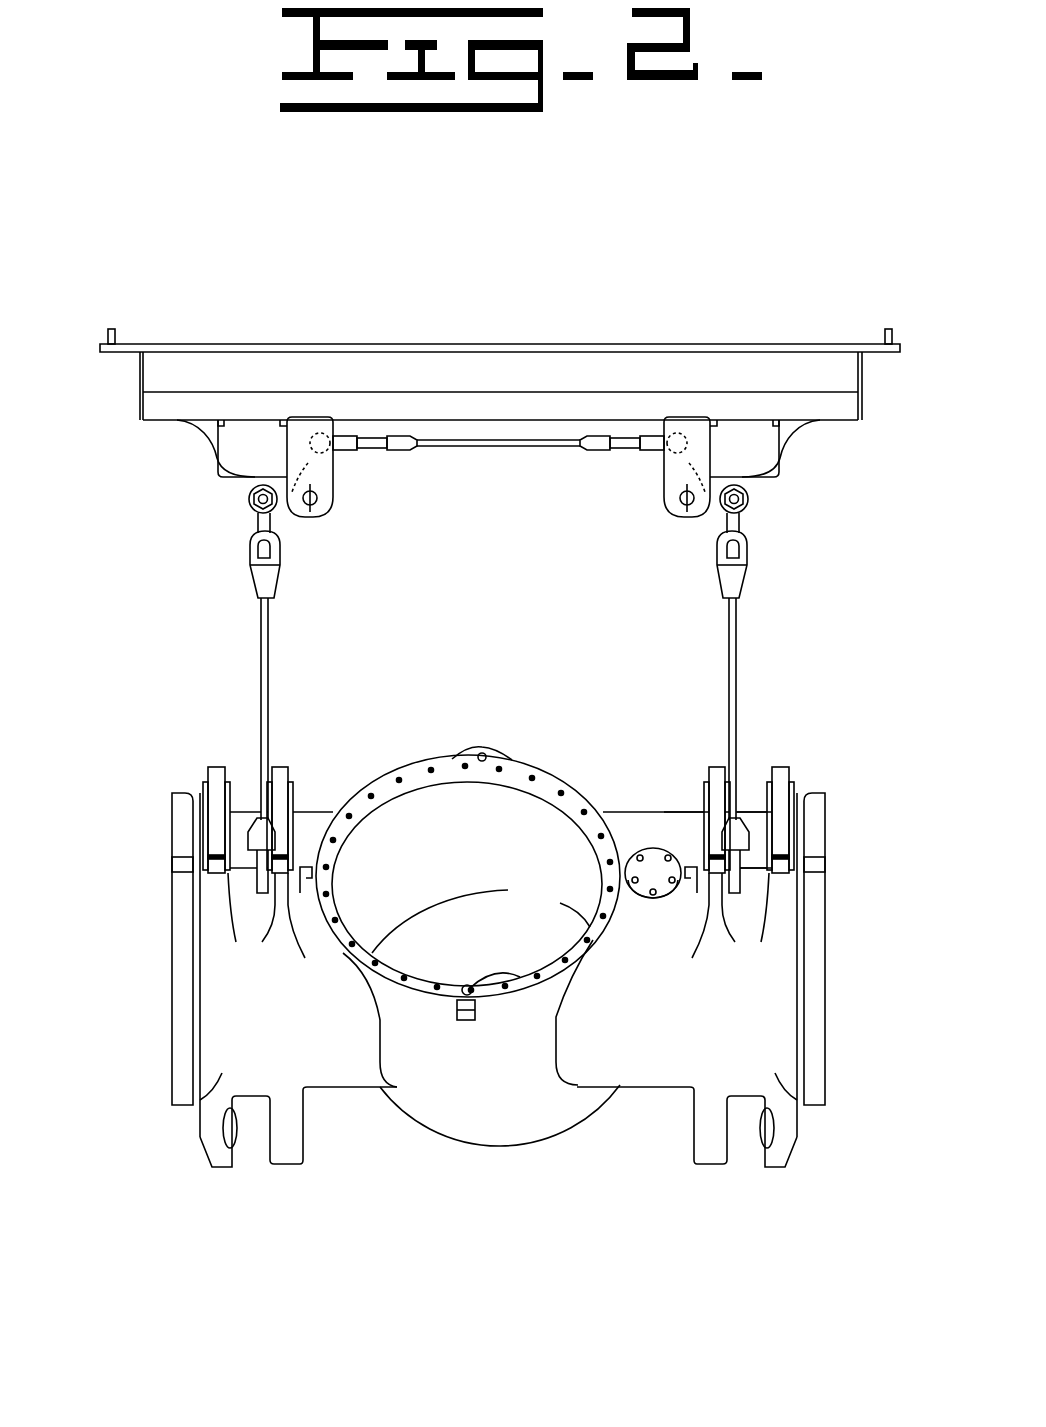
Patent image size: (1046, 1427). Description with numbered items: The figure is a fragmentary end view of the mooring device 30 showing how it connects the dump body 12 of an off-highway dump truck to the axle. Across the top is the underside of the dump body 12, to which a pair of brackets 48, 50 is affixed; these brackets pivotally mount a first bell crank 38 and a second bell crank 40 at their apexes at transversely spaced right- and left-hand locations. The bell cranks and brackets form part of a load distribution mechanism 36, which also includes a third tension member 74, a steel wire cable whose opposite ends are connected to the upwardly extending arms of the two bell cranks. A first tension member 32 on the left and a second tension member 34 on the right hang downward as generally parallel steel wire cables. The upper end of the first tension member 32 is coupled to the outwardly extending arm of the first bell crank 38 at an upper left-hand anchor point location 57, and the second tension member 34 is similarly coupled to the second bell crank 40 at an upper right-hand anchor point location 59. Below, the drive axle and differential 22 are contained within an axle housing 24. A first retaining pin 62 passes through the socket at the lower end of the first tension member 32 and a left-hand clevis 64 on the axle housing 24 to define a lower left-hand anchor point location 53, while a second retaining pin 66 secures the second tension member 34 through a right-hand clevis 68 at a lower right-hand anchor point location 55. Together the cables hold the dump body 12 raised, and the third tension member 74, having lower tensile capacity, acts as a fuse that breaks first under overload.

The dump body 12 is at (257, 297).
The drive axle and differential 22 is at (520, 1147).
The axle housing 24 is at (345, 1065).
The mooring device 30 is at (401, 666).
The first tension member 32 is at (263, 687).
The second tension member 34 is at (735, 669).
The load distribution mechanism 36 is at (187, 522).
The first bell crank 38 is at (283, 477).
The second bell crank 40 is at (747, 473).
The bracket 48 is at (337, 462).
The bracket 50 is at (670, 500).
The lower left-hand anchor point location 53 is at (250, 900).
The lower right-hand anchor point location 55 is at (750, 800).
The upper left-hand anchor point location 57 is at (250, 512).
The upper right-hand anchor point location 59 is at (757, 502).
The first retaining pin 62 is at (242, 875).
The left-hand clevis 64 is at (270, 912).
The second retaining pin 66 is at (752, 880).
The right-hand clevis 68 is at (713, 905).
The third tension member 74 is at (477, 441).